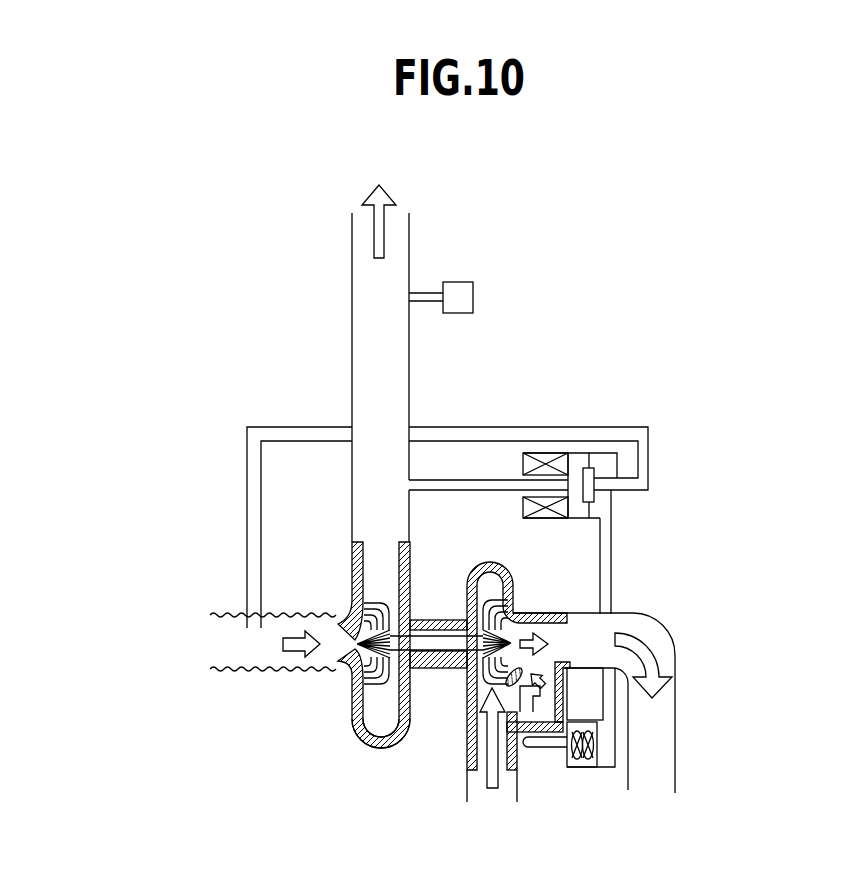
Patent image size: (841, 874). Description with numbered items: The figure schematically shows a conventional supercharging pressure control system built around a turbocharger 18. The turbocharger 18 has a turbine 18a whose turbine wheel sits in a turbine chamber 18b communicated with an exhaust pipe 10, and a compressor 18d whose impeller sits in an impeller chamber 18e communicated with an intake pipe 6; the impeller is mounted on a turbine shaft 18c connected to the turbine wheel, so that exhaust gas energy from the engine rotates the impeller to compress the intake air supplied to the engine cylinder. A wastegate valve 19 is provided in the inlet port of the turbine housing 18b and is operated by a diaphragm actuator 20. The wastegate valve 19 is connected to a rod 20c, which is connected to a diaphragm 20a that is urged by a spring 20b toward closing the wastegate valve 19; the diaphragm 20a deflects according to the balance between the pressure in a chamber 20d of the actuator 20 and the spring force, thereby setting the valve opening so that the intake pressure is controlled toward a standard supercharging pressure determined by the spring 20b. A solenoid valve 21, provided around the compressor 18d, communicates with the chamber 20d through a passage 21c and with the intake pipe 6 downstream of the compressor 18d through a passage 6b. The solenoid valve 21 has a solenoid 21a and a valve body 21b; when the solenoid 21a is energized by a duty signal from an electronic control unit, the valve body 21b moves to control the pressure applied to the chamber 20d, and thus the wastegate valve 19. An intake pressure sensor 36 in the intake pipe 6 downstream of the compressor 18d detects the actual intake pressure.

The intake pipe 6 is at (352, 352).
The passage 6b is at (472, 479).
The exhaust pipe 10 is at (668, 636).
The turbocharger 18 is at (362, 675).
The turbine 18a is at (505, 597).
The turbine chamber 18b is at (488, 587).
The turbine shaft 18c is at (441, 648).
The compressor 18d is at (352, 595).
The impeller chamber 18e is at (380, 725).
The wastegate valve 19 is at (522, 675).
The diaphragm actuator 20 is at (613, 772).
The diaphragm 20a is at (593, 744).
The spring 20b is at (580, 757).
The rod 20c is at (540, 750).
The chamber 20d is at (607, 718).
The solenoid valve 21 is at (615, 500).
The solenoid 21a is at (523, 503).
The valve body 21b is at (594, 480).
The passage 21c is at (612, 577).
The intake pressure sensor 36 is at (473, 296).